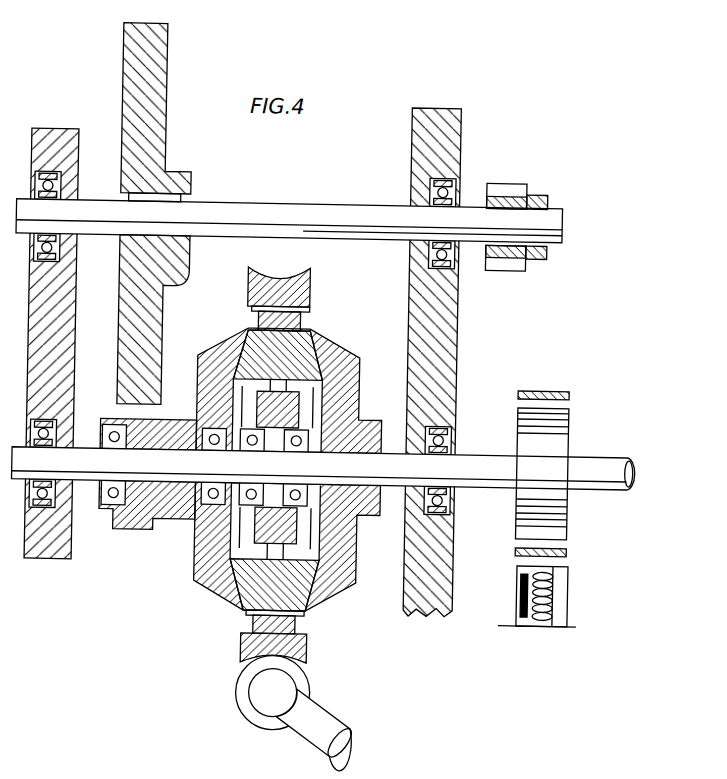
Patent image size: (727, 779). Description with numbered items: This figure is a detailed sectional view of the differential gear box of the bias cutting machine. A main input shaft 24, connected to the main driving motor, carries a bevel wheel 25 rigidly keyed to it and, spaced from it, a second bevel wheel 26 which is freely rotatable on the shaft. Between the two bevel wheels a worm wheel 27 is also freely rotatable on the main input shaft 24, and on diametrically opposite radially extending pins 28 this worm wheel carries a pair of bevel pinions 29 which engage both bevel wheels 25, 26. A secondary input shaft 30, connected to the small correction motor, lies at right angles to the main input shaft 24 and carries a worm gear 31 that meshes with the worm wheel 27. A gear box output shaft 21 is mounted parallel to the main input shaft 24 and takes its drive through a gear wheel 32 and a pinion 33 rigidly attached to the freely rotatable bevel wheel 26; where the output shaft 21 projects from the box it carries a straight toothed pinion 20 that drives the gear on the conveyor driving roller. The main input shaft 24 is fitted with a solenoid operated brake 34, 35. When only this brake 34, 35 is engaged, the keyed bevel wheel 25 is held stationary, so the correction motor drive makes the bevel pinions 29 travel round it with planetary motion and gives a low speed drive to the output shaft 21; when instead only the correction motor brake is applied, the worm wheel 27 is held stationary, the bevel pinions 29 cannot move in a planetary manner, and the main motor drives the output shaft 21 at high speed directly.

The straight toothed pinion 20 is at (503, 187).
The gear box output shaft 21 is at (545, 224).
The main input shaft 24 is at (593, 465).
The bevel wheel 25 is at (347, 579).
The second bevel wheel 26 is at (208, 580).
The worm wheel 27 is at (308, 281).
The radially extending pins 28 is at (258, 312).
The bevel pinions 29 is at (309, 329).
The secondary input shaft 30 is at (323, 699).
The worm gear 31 is at (237, 689).
The gear wheel 32 is at (153, 146).
The pinion 33 is at (137, 526).
The solenoid operated brake 34 is at (568, 573).
The solenoid operated brake 35 is at (526, 446).